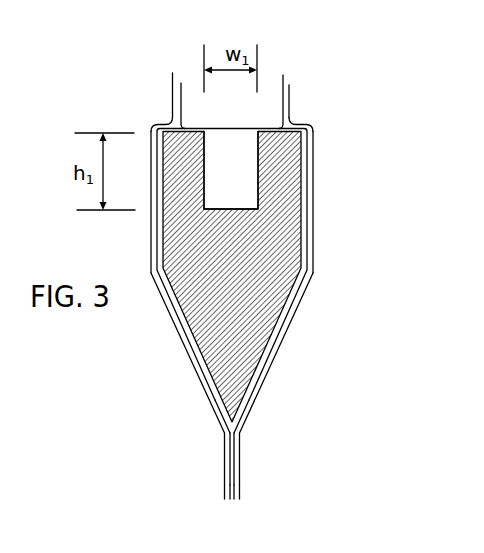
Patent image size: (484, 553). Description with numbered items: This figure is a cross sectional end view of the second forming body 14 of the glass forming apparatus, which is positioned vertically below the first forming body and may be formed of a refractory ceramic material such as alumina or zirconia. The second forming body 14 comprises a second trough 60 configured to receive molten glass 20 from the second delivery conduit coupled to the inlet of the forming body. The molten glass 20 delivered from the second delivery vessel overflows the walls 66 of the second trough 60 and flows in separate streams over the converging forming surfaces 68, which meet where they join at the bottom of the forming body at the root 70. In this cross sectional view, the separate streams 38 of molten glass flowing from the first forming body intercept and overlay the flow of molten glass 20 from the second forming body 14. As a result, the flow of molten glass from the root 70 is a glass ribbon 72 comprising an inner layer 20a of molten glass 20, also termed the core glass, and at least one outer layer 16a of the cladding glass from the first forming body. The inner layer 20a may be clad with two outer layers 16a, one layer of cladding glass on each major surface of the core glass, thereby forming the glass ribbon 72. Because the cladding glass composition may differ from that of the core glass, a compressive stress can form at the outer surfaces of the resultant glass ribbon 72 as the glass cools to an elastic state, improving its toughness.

The second forming body 14 is at (343, 213).
The outer layer 16a is at (225, 450).
The molten glass 20 is at (260, 127).
The inner layer 20a is at (230, 479).
The separate streams 38 is at (172, 103).
The second trough 60 is at (221, 146).
The walls 66 is at (165, 122).
The converging forming surfaces 68 is at (183, 333).
The root 70 is at (237, 427).
The glass ribbon 72 is at (214, 488).